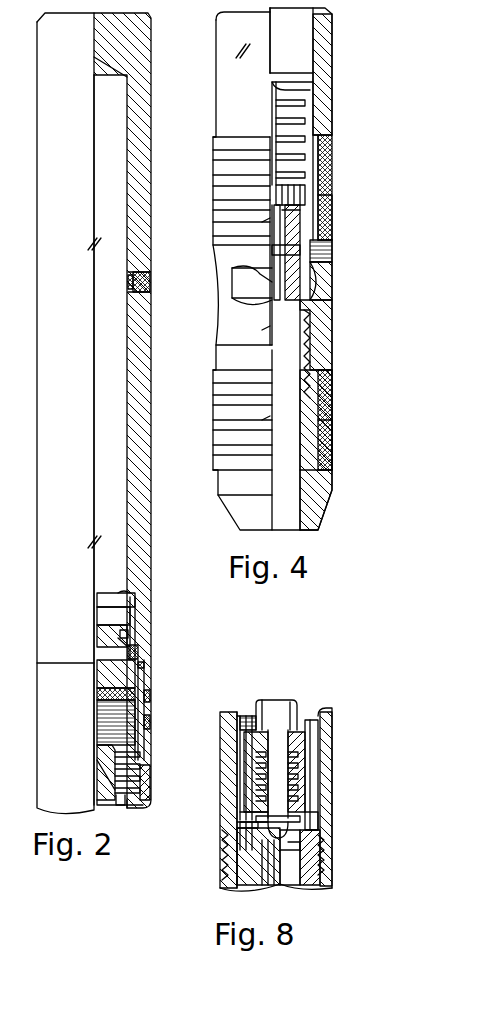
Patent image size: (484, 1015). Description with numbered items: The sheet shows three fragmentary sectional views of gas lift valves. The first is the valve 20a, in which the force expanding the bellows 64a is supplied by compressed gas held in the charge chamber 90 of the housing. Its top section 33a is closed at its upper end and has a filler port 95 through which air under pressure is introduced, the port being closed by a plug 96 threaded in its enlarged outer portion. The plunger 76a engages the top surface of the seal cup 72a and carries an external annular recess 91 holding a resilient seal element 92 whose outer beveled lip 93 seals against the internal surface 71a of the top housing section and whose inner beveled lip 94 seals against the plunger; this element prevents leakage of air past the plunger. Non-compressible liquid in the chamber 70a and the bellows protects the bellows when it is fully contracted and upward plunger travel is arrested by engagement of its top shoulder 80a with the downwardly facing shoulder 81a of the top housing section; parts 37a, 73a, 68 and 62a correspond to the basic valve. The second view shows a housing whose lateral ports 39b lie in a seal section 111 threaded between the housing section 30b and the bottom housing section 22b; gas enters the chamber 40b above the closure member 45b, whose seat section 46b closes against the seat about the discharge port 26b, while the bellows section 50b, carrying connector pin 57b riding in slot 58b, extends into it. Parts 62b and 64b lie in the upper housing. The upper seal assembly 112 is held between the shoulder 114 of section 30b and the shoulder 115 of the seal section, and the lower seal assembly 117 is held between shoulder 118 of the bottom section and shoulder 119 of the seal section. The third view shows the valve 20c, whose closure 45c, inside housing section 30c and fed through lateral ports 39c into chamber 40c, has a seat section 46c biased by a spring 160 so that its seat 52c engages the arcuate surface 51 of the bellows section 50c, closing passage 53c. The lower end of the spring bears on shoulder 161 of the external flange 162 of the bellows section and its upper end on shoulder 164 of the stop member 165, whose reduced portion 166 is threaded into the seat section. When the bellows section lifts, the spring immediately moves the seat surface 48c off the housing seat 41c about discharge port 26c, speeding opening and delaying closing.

In FIG. 2, the valve 20a is at (157, 426).
In FIG. 2, the top housing section 33a is at (146, 223).
In FIG. 2, the plug 96 is at (151, 281).
In FIG. 2, the filler port 95 is at (129, 283).
In FIG. 2, the charge chamber 90 is at (113, 386).
In FIG. 2, the downwardly facing annular shoulder 81a is at (118, 592).
In FIG. 2, the top shoulder 80a is at (130, 607).
In FIG. 2, the plunger 76a is at (134, 621).
In FIG. 2, the outer annular lip 93 is at (128, 634).
In FIG. 2, the seal element 92 is at (139, 657).
In FIG. 2, the inner annular lip 94 is at (116, 645).
In FIG. 2, the external annular recess 91 is at (118, 675).
In FIG. 2, the sleeve 37a is at (145, 671).
In FIG. 2, the seal 73a is at (148, 700).
In FIG. 2, the internal surface 71a is at (146, 727).
In FIG. 2, the seal cup 72a is at (105, 697).
In FIG. 2, the chamber 70a is at (104, 727).
In FIG. 2, the spring seat 68 is at (130, 735).
In FIG. 2, the valve member 62a is at (108, 761).
In FIG. 2, the bellows 64a is at (146, 768).
In FIG. 4, the housing section 30b is at (319, 52).
In FIG. 4, the valve member 62b is at (305, 80).
In FIG. 4, the spring 64b is at (322, 99).
In FIG. 4, the downwardly facing shoulder 114 is at (333, 137).
In FIG. 4, the upper seal assembly 112 is at (331, 150).
In FIG. 4, the chamber 40b is at (320, 178).
In FIG. 4, the closure member 45b is at (300, 213).
In FIG. 4, the upwardly facing annular shoulder 115 is at (330, 233).
In FIG. 4, the longitudinal slot 58b is at (327, 252).
In FIG. 4, the lateral ports 39b is at (330, 286).
In FIG. 4, the seal section 111 is at (328, 318).
In FIG. 4, the annular seat section 46b is at (325, 341).
In FIG. 4, the downwardly facing shoulder 119 is at (330, 386).
In FIG. 4, the lower seal assembly 117 is at (331, 406).
In FIG. 4, the upwardly facing shoulder 118 is at (329, 471).
In FIG. 4, the bottom housing section 22b is at (321, 498).
In FIG. 4, the discharge port 26b is at (290, 519).
In FIG. 4, the connector pin 57b is at (276, 246).
In FIG. 4, the bellows section 50b is at (276, 309).
In FIG. 8, the valve 20c is at (332, 712).
In FIG. 8, the passage 53c is at (238, 878).
In FIG. 8, the downwardly facing annular shoulder 164 is at (317, 741).
In FIG. 8, the housing section 30c is at (316, 758).
In FIG. 8, the spring 160 is at (297, 783).
In FIG. 8, the closure 45c is at (297, 706).
In FIG. 8, the chamber 40c is at (246, 716).
In FIG. 8, the stop member 165 is at (240, 720).
In FIG. 8, the bellows section 50c is at (246, 745).
In FIG. 8, the seat section 46c is at (242, 765).
In FIG. 8, the lower reduced portion 166 is at (245, 786).
In FIG. 8, the upper annular shoulder 161 is at (238, 803).
In FIG. 8, the external flange 162 is at (240, 816).
In FIG. 8, the seat 52c is at (250, 845).
In FIG. 8, the arcuate outer lower end surface 51 is at (237, 860).
In FIG. 8, the housing seat 41c is at (316, 821).
In FIG. 8, the seat surface 48c is at (328, 853).
In FIG. 8, the lateral ports 39c is at (330, 811).
In FIG. 8, the discharge port 26c is at (300, 881).